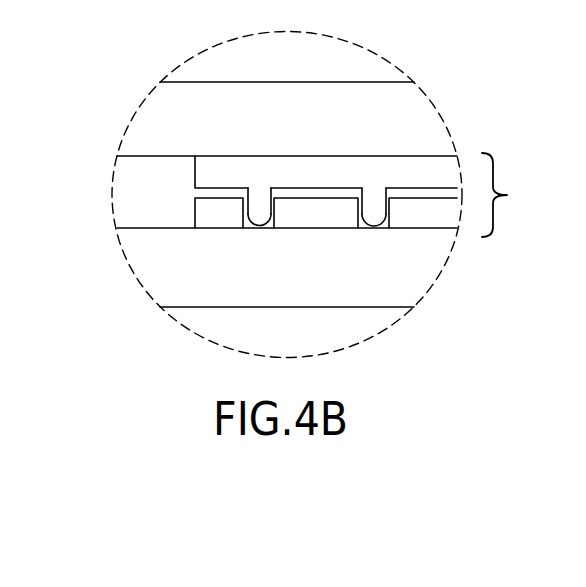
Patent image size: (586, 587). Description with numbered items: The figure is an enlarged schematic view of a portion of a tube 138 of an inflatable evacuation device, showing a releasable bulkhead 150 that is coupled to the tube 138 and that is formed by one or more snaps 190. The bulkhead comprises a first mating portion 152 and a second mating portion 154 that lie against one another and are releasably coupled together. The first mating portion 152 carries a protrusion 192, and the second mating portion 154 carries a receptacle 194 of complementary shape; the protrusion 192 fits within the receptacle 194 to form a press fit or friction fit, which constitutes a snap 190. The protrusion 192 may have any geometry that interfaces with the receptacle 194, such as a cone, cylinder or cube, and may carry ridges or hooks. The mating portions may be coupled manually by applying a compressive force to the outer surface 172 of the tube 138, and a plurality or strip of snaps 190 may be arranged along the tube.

The tubes 138 is at (405, 115).
The releasable bulkhead 150 is at (160, 198).
The first mating portion 152 is at (180, 138).
The second mating portion 154 is at (185, 241).
The outer surface 172 is at (275, 84).
The snap 190 is at (512, 195).
The protrusion 192 is at (256, 200).
The receptacle 194 is at (265, 230).